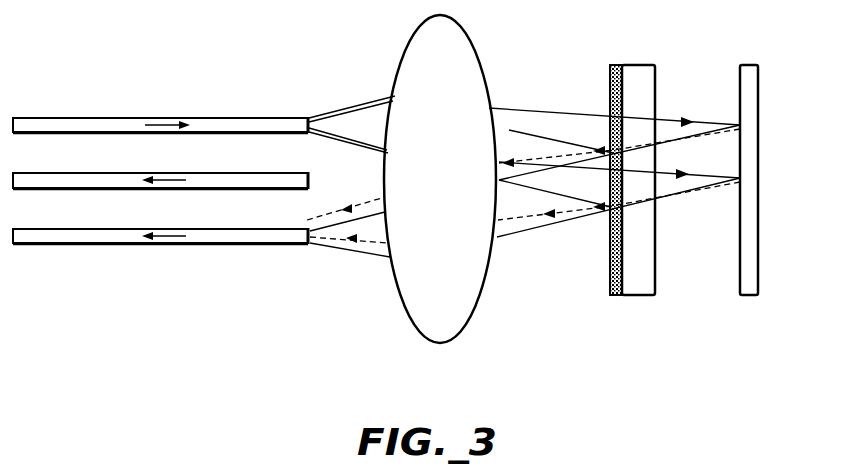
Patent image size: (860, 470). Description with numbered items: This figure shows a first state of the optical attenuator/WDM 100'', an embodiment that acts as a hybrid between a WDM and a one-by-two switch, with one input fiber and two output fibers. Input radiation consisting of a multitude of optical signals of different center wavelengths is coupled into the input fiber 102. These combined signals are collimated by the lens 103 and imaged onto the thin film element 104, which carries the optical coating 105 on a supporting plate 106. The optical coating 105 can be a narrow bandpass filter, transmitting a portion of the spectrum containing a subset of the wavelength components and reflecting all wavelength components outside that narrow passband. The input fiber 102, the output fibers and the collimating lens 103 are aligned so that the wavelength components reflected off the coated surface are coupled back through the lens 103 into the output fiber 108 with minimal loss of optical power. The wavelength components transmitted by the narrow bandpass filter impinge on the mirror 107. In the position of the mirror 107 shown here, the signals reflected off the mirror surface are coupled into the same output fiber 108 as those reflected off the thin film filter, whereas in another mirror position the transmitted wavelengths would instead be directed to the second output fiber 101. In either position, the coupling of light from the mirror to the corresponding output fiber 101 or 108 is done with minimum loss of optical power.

The optical attenuator/WDM 100'' is at (423, 184).
The output fiber 101 is at (40, 173).
The input fiber 102 is at (40, 118).
The lens 103 is at (473, 310).
The thin film element 104 is at (640, 282).
The optical coating 105 is at (616, 65).
The substrate 106 is at (633, 65).
The mirror 107 is at (757, 228).
The output fiber 108 is at (40, 229).